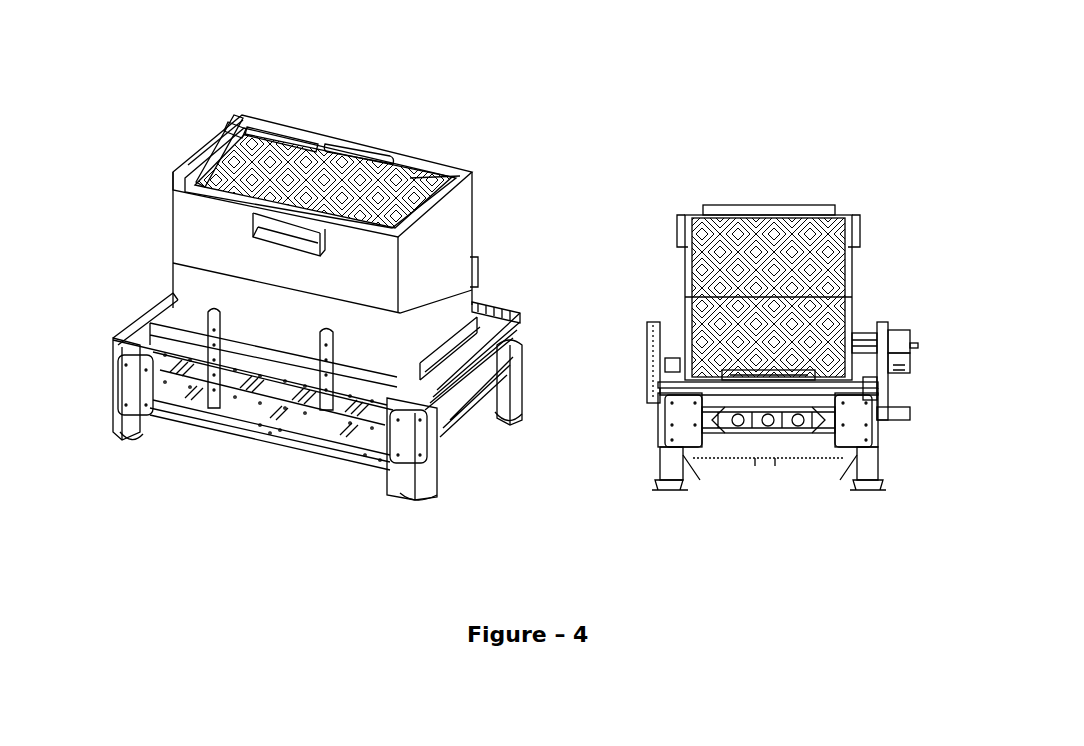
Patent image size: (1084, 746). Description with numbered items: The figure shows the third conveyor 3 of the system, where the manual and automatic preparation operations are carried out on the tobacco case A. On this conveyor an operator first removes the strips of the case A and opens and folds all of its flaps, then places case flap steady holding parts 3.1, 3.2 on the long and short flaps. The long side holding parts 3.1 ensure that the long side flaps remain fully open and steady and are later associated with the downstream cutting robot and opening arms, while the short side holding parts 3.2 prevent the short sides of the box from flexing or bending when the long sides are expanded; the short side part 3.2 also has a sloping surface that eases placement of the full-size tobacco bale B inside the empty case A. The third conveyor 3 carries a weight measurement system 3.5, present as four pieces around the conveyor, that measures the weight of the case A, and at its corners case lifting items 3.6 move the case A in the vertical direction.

The third conveyor 3 is at (182, 424).
The long side holding parts 3.1 is at (315, 137).
The short side holding parts 3.2 is at (245, 117).
The weight measurement system 3.5 is at (352, 409).
The case lifting items 3.6 is at (215, 424).
The case A is at (478, 241).
The tobacco bale B is at (412, 190).